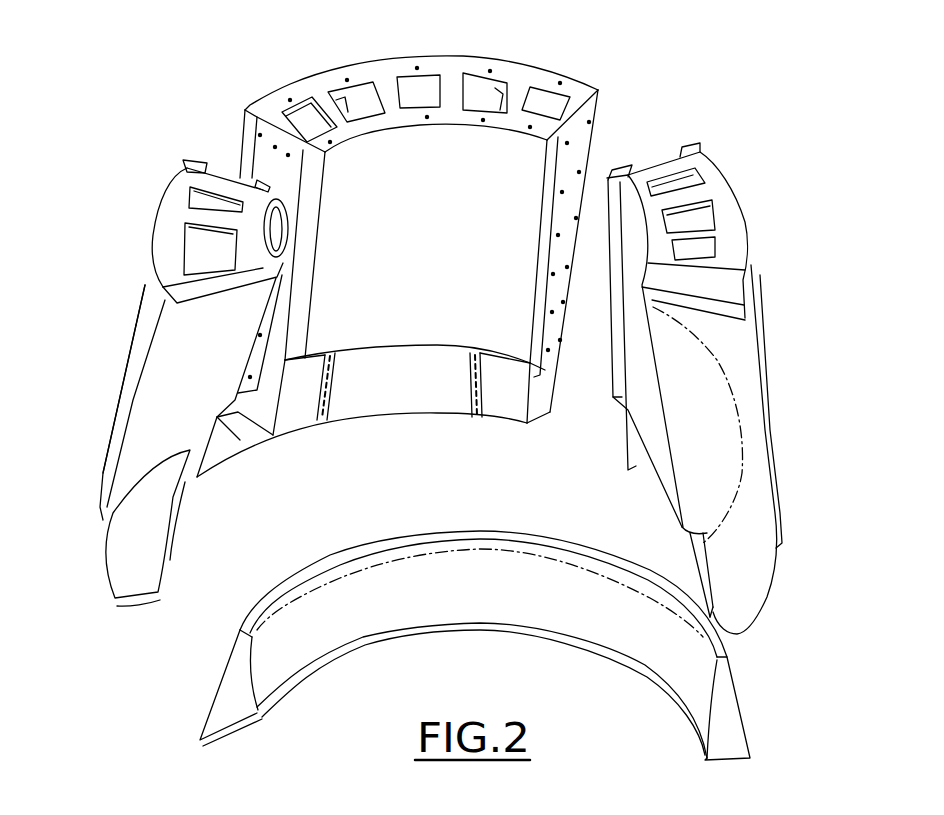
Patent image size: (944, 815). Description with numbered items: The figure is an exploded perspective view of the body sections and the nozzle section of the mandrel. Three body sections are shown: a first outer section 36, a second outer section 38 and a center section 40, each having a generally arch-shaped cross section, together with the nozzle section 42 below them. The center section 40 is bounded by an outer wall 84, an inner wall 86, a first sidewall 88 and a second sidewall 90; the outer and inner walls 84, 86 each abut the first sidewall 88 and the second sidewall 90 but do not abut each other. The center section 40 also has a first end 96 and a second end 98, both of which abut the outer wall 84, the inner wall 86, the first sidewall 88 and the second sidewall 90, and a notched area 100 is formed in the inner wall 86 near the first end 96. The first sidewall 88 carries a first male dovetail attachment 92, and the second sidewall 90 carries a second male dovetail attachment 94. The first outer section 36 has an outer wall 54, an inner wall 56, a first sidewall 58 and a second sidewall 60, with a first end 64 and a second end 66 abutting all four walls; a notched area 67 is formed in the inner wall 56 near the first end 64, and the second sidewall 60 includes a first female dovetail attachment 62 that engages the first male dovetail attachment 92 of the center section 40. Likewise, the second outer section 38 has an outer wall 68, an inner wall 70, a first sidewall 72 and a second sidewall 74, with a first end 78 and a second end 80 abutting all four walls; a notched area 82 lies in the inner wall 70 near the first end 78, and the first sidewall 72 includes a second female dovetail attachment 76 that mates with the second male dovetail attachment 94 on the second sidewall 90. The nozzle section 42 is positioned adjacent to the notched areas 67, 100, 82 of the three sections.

The center section 40 is at (417, 153).
The second end 98 is at (380, 67).
The first male dovetail attachment 92 is at (265, 160).
The first sidewall 88 is at (240, 165).
The outer wall 84 is at (593, 109).
The second male dovetail attachment 94 is at (590, 165).
The inner wall 86 is at (413, 290).
The notched area 100 is at (357, 393).
The first end 96 is at (443, 417).
The second sidewall 90 is at (540, 420).
The inner wall 56 is at (247, 447).
The outer wall 54 is at (150, 302).
The second end 66 is at (160, 200).
The second sidewall 60 is at (222, 163).
The first female dovetail attachment 62 is at (190, 162).
The first sidewall 58 is at (190, 350).
The first outer section 36 is at (165, 400).
The notched area 67 is at (178, 508).
The first end 64 is at (150, 605).
The outer wall 68 is at (757, 290).
The second end 80 is at (737, 220).
The first sidewall 72 is at (650, 167).
The second female dovetail attachment 76 is at (687, 143).
The inner wall 70 is at (632, 358).
The notched area 82 is at (653, 463).
The second sidewall 74 is at (723, 437).
The second outer section 38 is at (747, 513).
The first end 78 is at (747, 625).
The nozzle section 42 is at (478, 630).